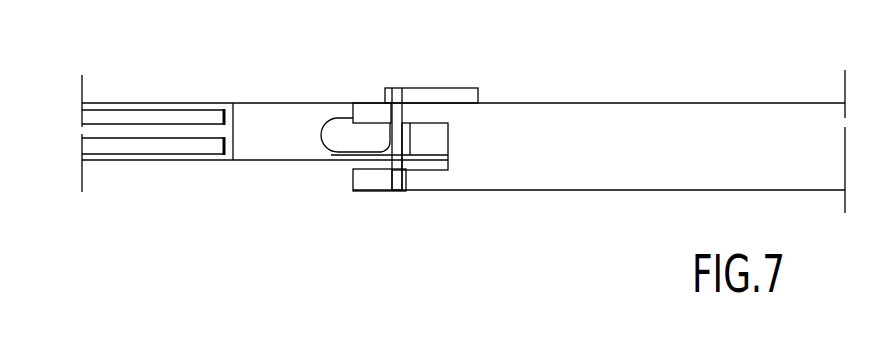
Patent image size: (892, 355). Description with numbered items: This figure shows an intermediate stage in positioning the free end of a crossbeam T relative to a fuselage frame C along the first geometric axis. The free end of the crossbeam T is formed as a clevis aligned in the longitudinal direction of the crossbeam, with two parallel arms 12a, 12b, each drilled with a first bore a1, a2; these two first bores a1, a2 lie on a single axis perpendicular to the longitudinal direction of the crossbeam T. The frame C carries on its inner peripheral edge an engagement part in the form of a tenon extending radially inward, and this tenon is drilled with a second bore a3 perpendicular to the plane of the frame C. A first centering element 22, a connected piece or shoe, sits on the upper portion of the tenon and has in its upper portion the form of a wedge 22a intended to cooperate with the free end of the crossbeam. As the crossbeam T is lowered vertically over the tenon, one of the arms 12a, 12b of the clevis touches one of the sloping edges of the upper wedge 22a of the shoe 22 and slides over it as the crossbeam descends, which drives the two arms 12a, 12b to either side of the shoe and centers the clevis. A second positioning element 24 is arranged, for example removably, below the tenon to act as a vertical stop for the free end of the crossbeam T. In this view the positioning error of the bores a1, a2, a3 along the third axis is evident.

The crossbeam T is at (743, 102).
The fuselage frame C is at (250, 103).
The first centering element 22 is at (331, 150).
The wedge 22a is at (332, 123).
The arm of the clevis 12a is at (362, 103).
The arm of the clevis 12b is at (362, 182).
The first bore a1 is at (401, 103).
The first bore a2 is at (397, 182).
The second bore a3 is at (405, 137).
The second positioning element 24 is at (457, 88).